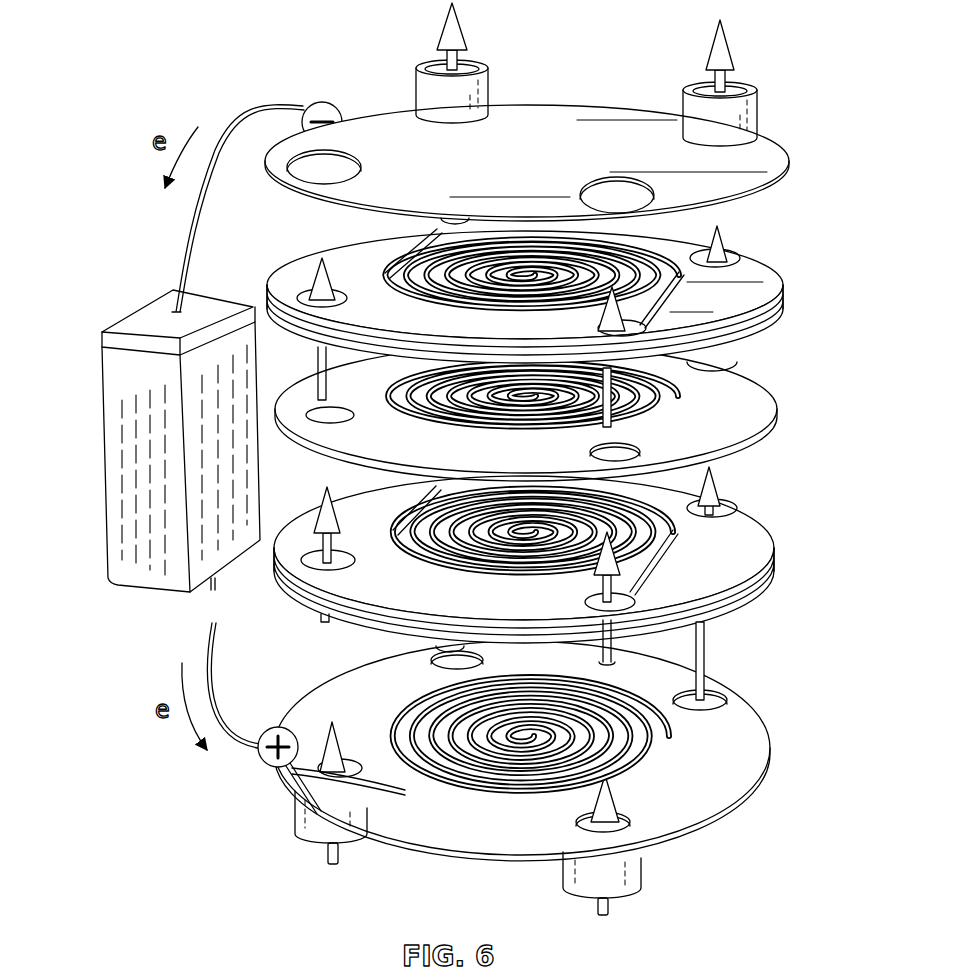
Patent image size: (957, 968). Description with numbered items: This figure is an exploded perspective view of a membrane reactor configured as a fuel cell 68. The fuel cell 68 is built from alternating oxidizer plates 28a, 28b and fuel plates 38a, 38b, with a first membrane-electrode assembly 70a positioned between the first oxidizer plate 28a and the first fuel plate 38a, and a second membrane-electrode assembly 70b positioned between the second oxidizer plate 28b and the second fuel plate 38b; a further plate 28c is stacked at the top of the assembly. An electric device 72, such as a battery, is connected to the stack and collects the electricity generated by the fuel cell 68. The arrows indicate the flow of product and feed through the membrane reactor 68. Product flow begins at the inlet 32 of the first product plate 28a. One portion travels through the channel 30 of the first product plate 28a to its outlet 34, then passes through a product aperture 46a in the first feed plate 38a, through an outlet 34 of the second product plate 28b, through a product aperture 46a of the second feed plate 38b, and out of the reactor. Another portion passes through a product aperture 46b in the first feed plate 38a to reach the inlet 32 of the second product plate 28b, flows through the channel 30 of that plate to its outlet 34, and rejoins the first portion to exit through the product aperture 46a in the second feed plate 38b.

The membrane reactor 68 is at (458, 459).
The first oxidizer plate 28a is at (737, 766).
The second oxidizer plate 28b is at (744, 418).
The spacer plate 28c is at (766, 166).
The first fuel plate 38a is at (569, 570).
The second fuel plate 38b is at (567, 296).
The first membrane-electrode assembly 70a is at (780, 582).
The second membrane-electrode assembly 70b is at (784, 311).
The product aperture 46a is at (727, 252).
The product aperture 46b is at (280, 290).
The outlet 34 is at (730, 360).
The channel 30 is at (345, 418).
The inlet 32 is at (343, 413).
The electric device 72 is at (142, 322).